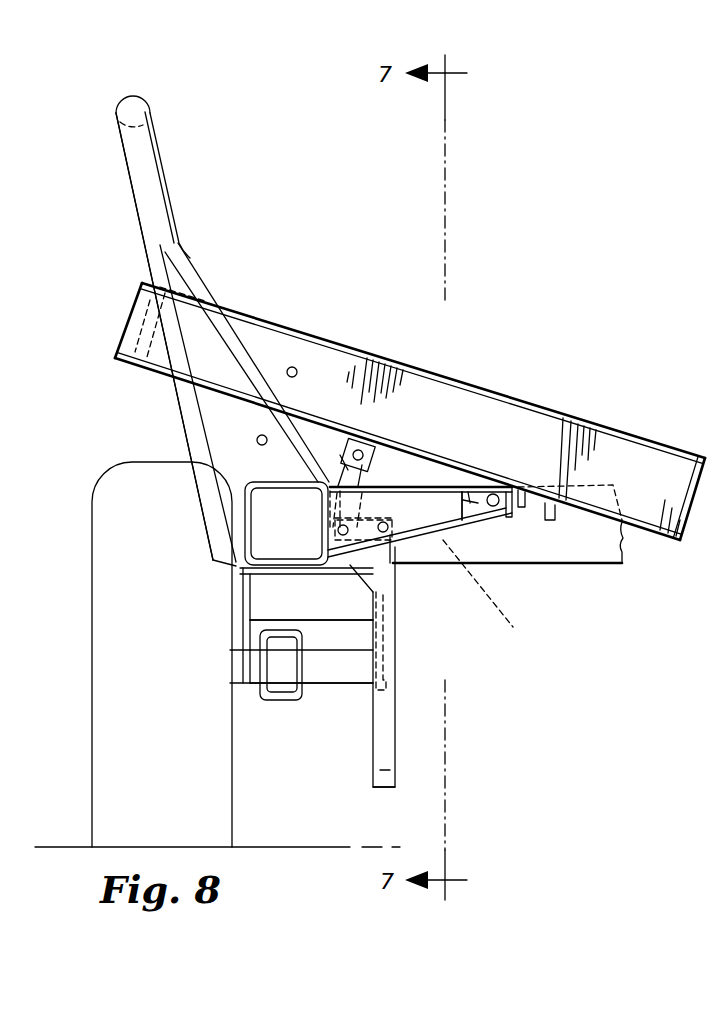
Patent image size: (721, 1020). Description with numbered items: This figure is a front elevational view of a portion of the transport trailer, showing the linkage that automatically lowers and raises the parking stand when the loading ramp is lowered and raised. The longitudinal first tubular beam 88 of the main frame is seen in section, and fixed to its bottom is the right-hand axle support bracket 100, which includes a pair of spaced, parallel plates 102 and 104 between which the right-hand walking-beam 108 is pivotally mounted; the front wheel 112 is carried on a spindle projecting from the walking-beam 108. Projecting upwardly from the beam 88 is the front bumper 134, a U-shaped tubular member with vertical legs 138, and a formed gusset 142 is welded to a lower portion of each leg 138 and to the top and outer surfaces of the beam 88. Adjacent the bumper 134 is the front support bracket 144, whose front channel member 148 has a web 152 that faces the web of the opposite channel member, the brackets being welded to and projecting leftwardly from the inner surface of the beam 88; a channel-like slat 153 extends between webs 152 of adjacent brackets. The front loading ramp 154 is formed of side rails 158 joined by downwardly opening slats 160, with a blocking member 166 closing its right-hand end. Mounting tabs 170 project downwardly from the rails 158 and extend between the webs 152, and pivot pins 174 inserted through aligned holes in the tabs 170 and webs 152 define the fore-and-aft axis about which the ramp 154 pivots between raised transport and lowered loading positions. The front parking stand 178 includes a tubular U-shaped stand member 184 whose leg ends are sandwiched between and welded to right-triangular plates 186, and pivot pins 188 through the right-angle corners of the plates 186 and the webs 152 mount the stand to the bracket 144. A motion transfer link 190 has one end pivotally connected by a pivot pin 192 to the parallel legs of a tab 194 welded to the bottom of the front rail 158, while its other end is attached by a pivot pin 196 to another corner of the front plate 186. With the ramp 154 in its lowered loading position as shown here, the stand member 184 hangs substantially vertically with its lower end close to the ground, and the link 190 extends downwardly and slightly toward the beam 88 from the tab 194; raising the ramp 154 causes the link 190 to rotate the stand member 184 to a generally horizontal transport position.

The first tubular beam 88 is at (243, 568).
The right-hand axle support bracket 100 is at (331, 636).
The plate 102 is at (247, 590).
The plate 104 is at (373, 605).
The right-hand walking-beam 108 is at (279, 702).
The front wheel 112 is at (93, 773).
The front bumper 134 is at (200, 152).
The vertical legs 138 is at (175, 397).
The gusset 142 is at (204, 328).
The front support bracket 144 is at (414, 562).
The front channel member 148 is at (495, 538).
The web 152 is at (413, 522).
The channel-like slat 153 is at (500, 593).
The front loading ramp 154 is at (594, 396).
The side rails 158 is at (402, 366).
The slats 160 is at (560, 518).
The blocking member 166 is at (150, 342).
The mounting tabs 170 is at (462, 470).
The pivot pins 174 is at (490, 492).
The front parking stand 178 is at (405, 727).
The stand member 184 is at (386, 790).
The right-triangular plates 186 is at (401, 587).
The pivot pins 188 is at (384, 520).
The motion transfer link 190 is at (334, 470).
The pivot pin 192 is at (358, 440).
The tab 194 is at (343, 455).
The pivot pin 196 is at (338, 528).